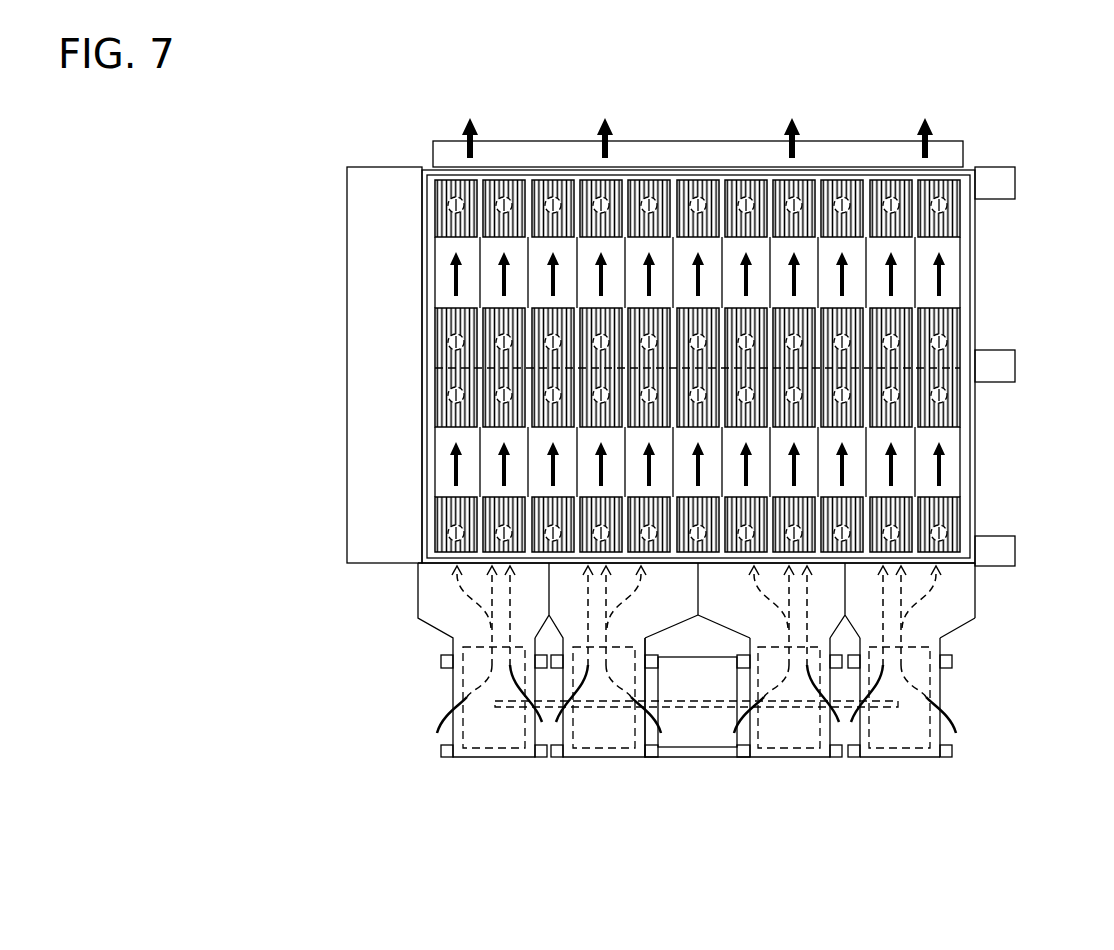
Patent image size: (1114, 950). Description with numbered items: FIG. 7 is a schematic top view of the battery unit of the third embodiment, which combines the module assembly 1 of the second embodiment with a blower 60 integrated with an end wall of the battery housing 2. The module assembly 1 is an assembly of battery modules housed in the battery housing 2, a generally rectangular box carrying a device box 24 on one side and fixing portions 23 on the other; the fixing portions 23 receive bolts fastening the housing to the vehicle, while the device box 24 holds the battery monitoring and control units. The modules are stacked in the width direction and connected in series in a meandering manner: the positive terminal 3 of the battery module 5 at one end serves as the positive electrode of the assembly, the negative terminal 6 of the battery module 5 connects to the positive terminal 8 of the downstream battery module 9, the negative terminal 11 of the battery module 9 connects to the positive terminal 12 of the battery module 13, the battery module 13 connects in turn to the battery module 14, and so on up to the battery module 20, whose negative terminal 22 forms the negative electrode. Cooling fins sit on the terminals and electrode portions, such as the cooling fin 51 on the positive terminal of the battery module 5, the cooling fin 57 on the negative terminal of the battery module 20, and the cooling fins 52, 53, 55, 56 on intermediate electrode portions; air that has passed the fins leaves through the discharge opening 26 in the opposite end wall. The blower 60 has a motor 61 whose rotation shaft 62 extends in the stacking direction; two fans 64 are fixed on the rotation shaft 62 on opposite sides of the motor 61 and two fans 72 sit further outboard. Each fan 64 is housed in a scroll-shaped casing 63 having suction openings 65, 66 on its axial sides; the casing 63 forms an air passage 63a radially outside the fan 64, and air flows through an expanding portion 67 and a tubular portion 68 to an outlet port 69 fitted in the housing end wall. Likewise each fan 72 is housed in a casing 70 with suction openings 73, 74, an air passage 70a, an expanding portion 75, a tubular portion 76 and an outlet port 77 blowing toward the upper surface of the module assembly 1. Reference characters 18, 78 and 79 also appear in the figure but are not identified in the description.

The module assembly 1 is at (1000, 301).
The battery housing 2 is at (975, 429).
The positive terminal 3 is at (445, 565).
The battery module 5 is at (435, 470).
The negative terminal 6 is at (440, 390).
The positive terminal 8 is at (440, 333).
The battery module 9 is at (440, 247).
The negative terminal 11 is at (453, 195).
The positive terminal 12 is at (510, 195).
The battery module 13 is at (490, 295).
The battery module 14 is at (440, 483).
The battery cell 18 is at (955, 455).
The battery module 20 is at (955, 251).
The negative terminal 22 is at (967, 153).
The fixing portions 23 is at (1013, 543).
The device box 24 is at (347, 480).
The discharge opening 26 is at (833, 141).
The cooling fin 51 is at (440, 513).
The cooling fin 52 is at (440, 410).
The cooling fin 53 is at (440, 205).
The cooling fin 55 is at (955, 504).
The cooling fin 56 is at (955, 410).
The cooling fin 57 is at (953, 223).
The blower 60 is at (990, 688).
The motor 61 is at (690, 757).
The rotation shaft 62 is at (728, 757).
The casing 63 is at (790, 757).
The air passage 63a is at (745, 625).
The fan 64 is at (810, 757).
The suction opening 65 is at (740, 757).
The suction opening 66 is at (848, 757).
The expanding portion 67 is at (700, 640).
The tubular portion 68 is at (698, 617).
The outlet port 69 is at (730, 622).
The casing 70 is at (902, 757).
The air passage 70a is at (945, 628).
The fan 72 is at (918, 757).
The suction opening 73 is at (860, 757).
The suction opening 74 is at (942, 730).
The expanding portion 75 is at (963, 628).
The tubular portion 76 is at (977, 582).
The outlet port 77 is at (977, 565).
The mounting tab 78 is at (953, 757).
The connector tab 79 is at (838, 757).